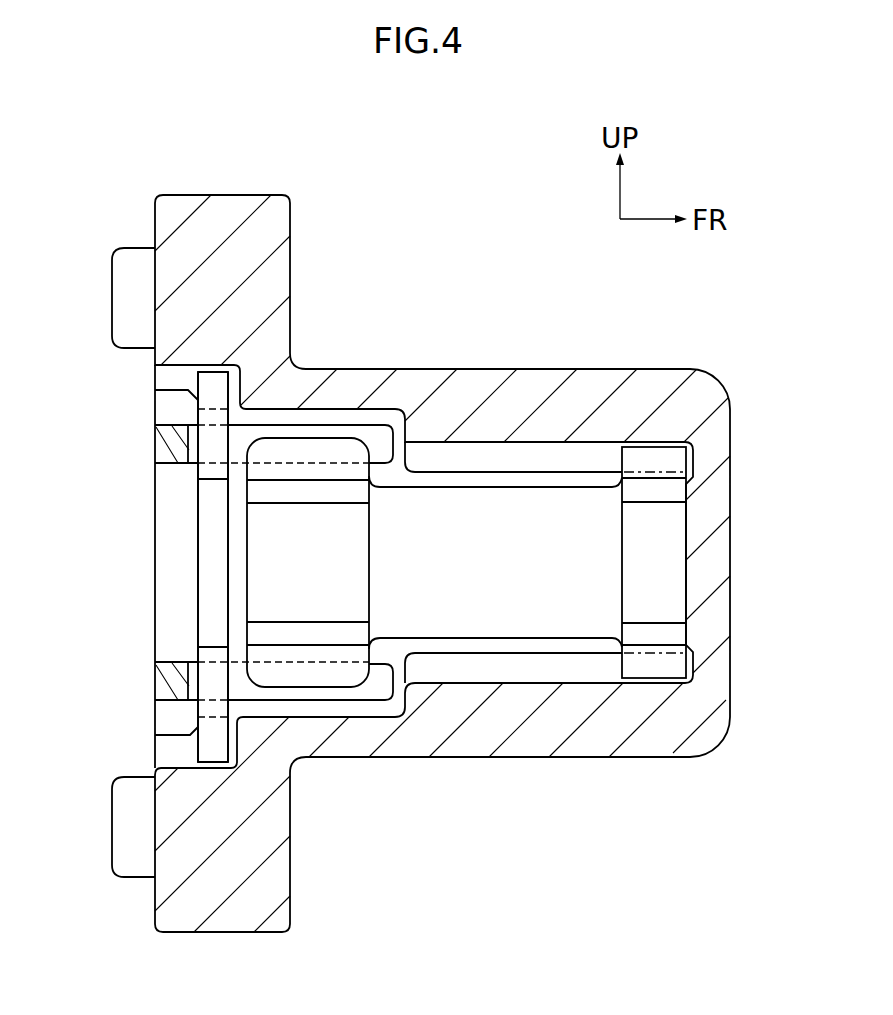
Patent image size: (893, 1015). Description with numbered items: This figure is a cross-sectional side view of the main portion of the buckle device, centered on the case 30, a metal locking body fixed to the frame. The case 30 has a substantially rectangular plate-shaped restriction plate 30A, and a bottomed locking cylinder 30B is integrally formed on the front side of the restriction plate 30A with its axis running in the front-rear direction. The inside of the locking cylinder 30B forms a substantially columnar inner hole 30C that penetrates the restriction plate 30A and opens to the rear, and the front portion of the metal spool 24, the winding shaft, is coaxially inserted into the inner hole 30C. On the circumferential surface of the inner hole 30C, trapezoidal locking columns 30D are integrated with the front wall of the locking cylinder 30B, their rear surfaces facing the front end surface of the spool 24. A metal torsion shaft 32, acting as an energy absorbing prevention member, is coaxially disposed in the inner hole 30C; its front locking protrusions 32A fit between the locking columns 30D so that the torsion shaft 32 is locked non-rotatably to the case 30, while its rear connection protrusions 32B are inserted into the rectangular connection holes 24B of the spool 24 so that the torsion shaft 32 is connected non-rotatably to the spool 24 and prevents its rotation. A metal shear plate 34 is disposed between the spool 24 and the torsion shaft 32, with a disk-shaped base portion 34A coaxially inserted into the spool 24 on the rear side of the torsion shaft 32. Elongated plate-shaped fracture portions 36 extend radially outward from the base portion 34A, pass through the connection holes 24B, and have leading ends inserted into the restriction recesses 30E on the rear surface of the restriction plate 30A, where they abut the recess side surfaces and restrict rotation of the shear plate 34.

The spool 24 is at (186, 426).
The connection hole 24B is at (384, 440).
The case 30 is at (466, 368).
The restriction plate 30A is at (291, 230).
The locking cylinder 30B is at (645, 368).
The inner hole 30C is at (503, 688).
The locking column 30D is at (517, 457).
The restriction recess 30E is at (160, 377).
The torsion shaft 32 is at (560, 487).
The locking protrusion 32A is at (652, 447).
The connection protrusion 32B is at (317, 440).
The shear plate 34 is at (197, 503).
The base portion 34A is at (197, 597).
The fracture portion 36 is at (212, 372).